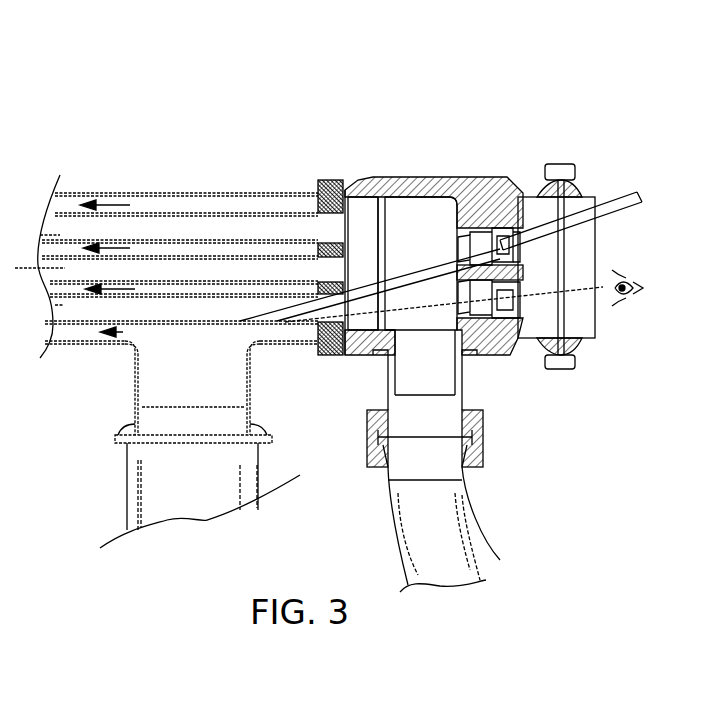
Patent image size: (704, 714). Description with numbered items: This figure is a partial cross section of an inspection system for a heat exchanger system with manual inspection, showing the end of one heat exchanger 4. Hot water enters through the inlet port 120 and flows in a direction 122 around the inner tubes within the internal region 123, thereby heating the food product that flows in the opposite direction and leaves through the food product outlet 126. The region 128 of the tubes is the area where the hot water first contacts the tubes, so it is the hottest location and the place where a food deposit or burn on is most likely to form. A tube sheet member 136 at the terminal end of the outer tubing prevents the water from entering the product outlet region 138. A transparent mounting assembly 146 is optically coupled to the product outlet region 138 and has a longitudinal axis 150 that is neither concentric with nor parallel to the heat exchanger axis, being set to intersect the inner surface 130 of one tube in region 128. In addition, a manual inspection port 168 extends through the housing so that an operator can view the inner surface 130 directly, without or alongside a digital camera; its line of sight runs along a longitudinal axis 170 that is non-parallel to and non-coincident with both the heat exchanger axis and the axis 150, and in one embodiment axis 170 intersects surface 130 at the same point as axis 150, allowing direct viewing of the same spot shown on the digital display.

The sensor assembly 4 is at (55, 305).
The inlet port 120 is at (167, 480).
The direction of hot water flow 122 is at (190, 404).
The internal region 123 is at (190, 208).
The food product outlet 126 is at (440, 532).
The region of tubes 128 is at (240, 331).
The inner surface of tube 130 is at (248, 317).
The tube sheet member 136 is at (347, 187).
The product outlet region 138 is at (365, 235).
The transparent mounting assembly 146 is at (517, 347).
The longitudinal axis of transparent mounting assembly 150 is at (572, 290).
The manual inspection port 168 is at (628, 185).
The longitudinal axis of manual inspection port 170 is at (597, 212).